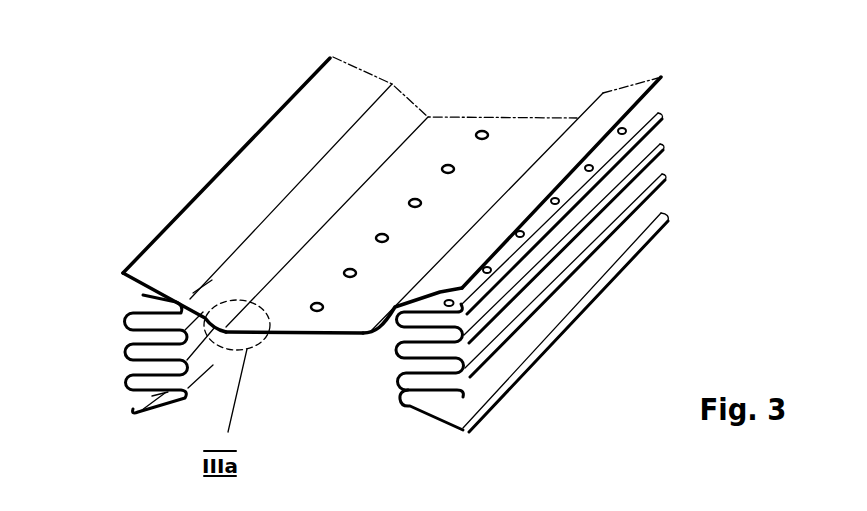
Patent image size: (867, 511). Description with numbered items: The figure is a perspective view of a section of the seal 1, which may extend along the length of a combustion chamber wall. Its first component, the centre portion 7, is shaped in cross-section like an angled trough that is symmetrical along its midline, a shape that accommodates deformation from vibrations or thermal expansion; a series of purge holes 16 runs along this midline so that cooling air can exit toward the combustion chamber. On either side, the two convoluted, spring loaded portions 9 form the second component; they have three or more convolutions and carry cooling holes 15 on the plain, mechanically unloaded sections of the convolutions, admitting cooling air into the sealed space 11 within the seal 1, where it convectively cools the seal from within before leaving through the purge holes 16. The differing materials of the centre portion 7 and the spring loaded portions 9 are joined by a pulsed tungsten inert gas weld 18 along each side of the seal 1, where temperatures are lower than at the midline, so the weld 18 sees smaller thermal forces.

The seal 1 is at (507, 88).
The centre portion 7 is at (417, 160).
The spring loaded portions 9 is at (82, 270).
The sealed space 11 is at (285, 400).
The cooling holes 15 is at (521, 237).
The purge holes 16 is at (406, 200).
The pulsed tungsten inert gas weld 18 is at (178, 214).